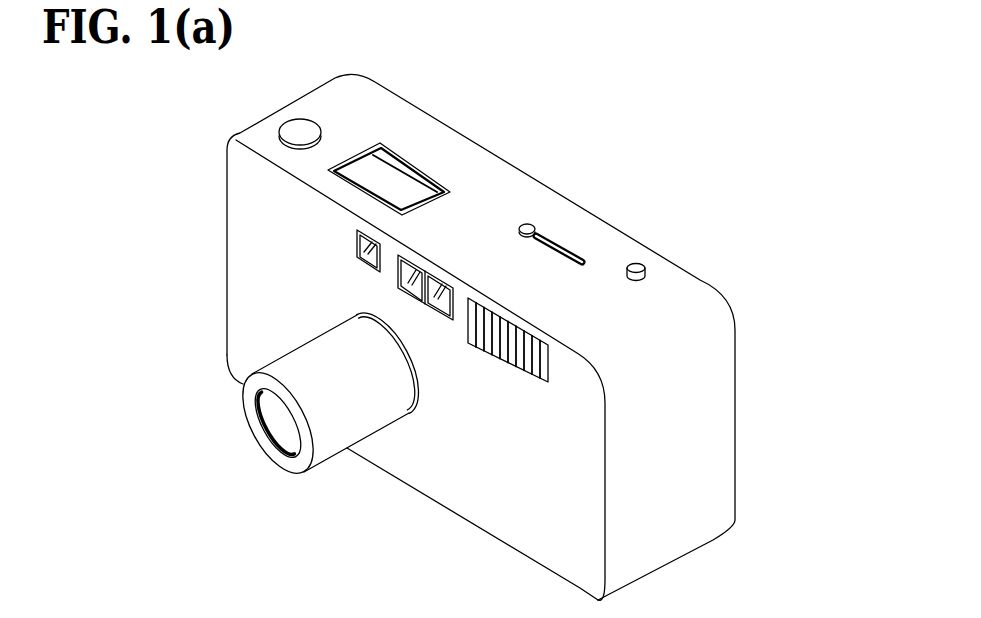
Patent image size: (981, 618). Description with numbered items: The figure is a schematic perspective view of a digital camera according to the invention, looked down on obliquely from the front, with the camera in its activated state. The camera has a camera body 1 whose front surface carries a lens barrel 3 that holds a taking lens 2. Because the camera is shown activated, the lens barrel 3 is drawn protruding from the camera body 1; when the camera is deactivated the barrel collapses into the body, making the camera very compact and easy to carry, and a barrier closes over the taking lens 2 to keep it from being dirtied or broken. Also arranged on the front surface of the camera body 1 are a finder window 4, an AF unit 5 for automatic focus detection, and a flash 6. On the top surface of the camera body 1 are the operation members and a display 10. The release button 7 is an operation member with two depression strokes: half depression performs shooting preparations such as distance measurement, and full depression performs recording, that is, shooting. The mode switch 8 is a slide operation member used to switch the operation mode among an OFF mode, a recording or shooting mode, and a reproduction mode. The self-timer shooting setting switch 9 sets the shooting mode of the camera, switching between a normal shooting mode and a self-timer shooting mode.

The camera body 1 is at (513, 167).
The taking lens 2 is at (290, 440).
The lens barrel 3 is at (355, 413).
The finder window 4 is at (357, 248).
The AF unit 5 is at (417, 288).
The flash 6 is at (487, 327).
The release button 7 is at (293, 127).
The mode switch 8 is at (527, 226).
The self-timer shooting setting switch 9 is at (637, 267).
The display 10 is at (406, 162).